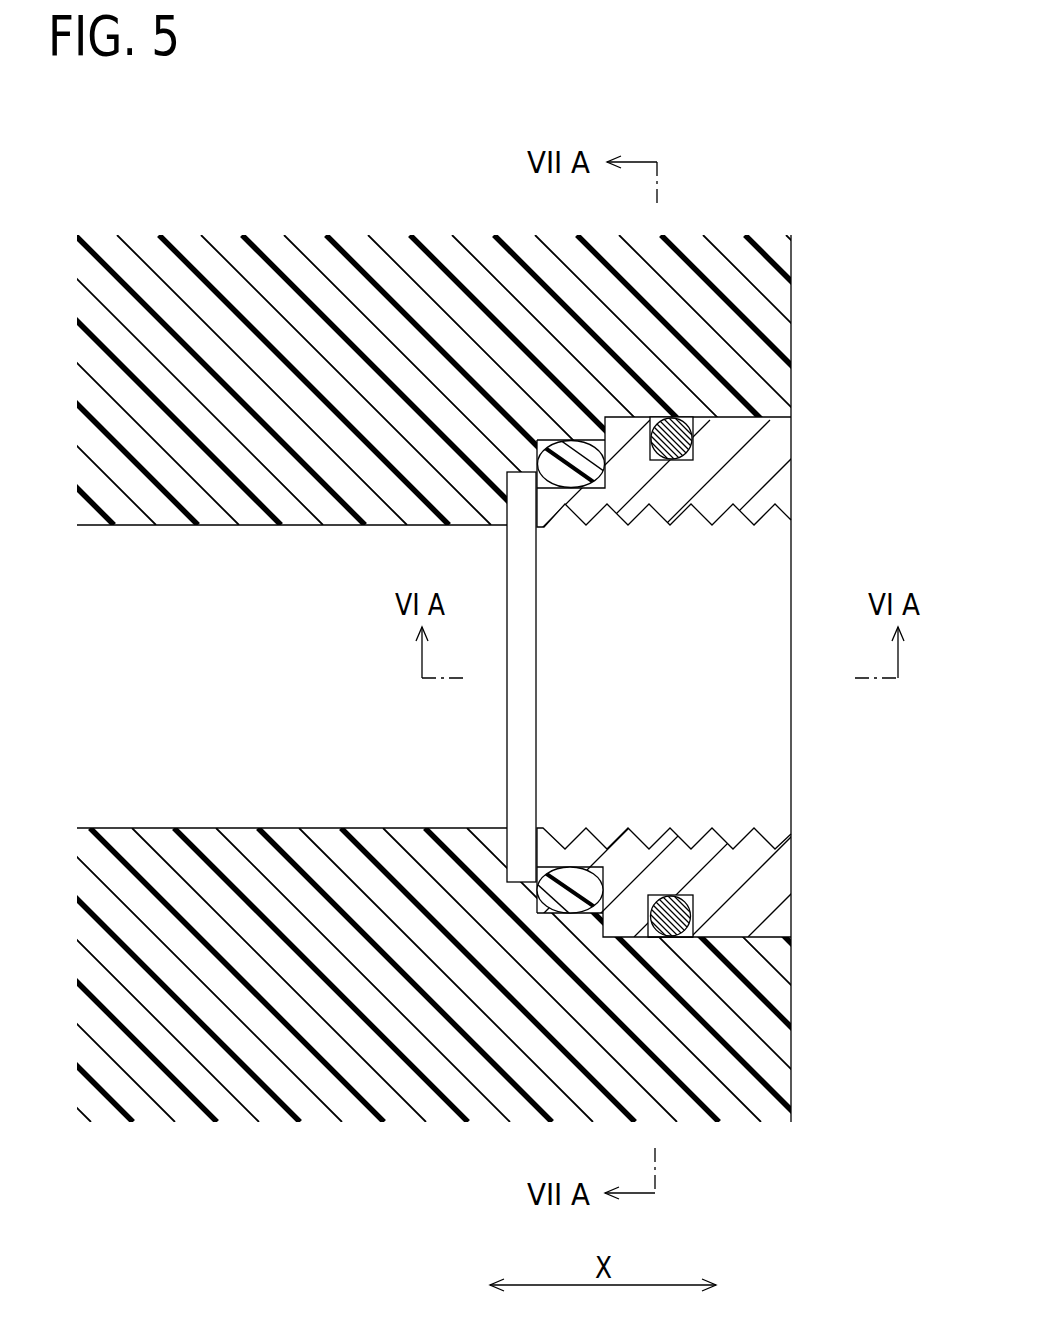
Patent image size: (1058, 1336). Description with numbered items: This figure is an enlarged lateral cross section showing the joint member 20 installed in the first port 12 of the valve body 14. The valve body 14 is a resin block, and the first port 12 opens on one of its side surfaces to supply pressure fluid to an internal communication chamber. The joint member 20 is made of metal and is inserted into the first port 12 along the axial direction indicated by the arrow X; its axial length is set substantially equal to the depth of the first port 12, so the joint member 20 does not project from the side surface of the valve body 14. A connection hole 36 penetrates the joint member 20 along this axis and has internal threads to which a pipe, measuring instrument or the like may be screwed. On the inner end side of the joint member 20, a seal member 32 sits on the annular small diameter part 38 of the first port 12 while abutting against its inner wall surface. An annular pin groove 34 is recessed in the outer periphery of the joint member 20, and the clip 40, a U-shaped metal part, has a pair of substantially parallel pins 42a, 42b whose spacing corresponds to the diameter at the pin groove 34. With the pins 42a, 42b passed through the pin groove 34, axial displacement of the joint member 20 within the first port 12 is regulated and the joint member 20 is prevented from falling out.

The first port 12 is at (784, 931).
The valve body 14 is at (770, 300).
The joint member 20 is at (795, 440).
The seal member 32 is at (568, 892).
The pin groove 34 is at (670, 942).
The connection hole 36 is at (773, 845).
The small diameter part 38 is at (550, 488).
The clip 40 is at (668, 940).
The pin 42a is at (666, 427).
The pin 42b is at (673, 940).